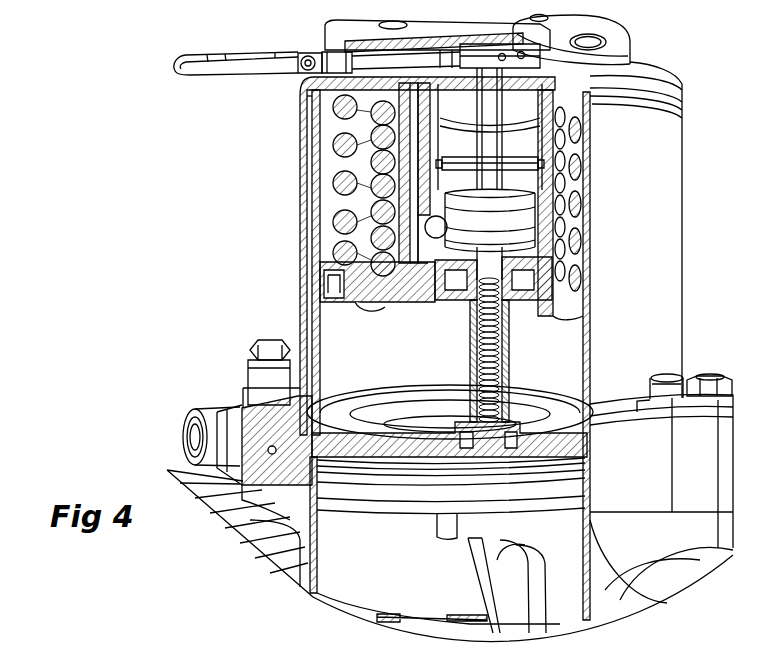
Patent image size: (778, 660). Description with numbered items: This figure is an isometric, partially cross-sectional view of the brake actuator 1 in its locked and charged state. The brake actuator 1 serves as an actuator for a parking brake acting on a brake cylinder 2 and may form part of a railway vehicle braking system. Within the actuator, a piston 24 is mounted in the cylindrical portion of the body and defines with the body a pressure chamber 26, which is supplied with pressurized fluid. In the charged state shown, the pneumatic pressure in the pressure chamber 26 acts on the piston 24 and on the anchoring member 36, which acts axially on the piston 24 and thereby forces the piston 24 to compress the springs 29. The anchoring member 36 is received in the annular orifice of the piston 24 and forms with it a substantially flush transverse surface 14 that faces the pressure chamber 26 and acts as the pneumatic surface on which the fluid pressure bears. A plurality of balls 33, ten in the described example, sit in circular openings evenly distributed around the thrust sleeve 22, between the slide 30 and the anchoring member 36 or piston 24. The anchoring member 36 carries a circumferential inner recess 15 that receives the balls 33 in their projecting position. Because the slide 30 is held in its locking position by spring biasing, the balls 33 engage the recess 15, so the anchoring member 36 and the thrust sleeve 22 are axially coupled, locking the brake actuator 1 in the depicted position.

The brake actuator 1 is at (675, 72).
The brake cylinder 2 is at (322, 507).
The transverse surface 14 is at (415, 300).
The inner recess 15 is at (424, 236).
The thrust sleeve 22 is at (507, 348).
The piston 24 is at (430, 110).
The pressure chamber 26 is at (417, 361).
The springs 29 is at (352, 146).
The slide 30 is at (497, 228).
The balls 33 is at (425, 219).
The anchoring member 36 is at (420, 287).